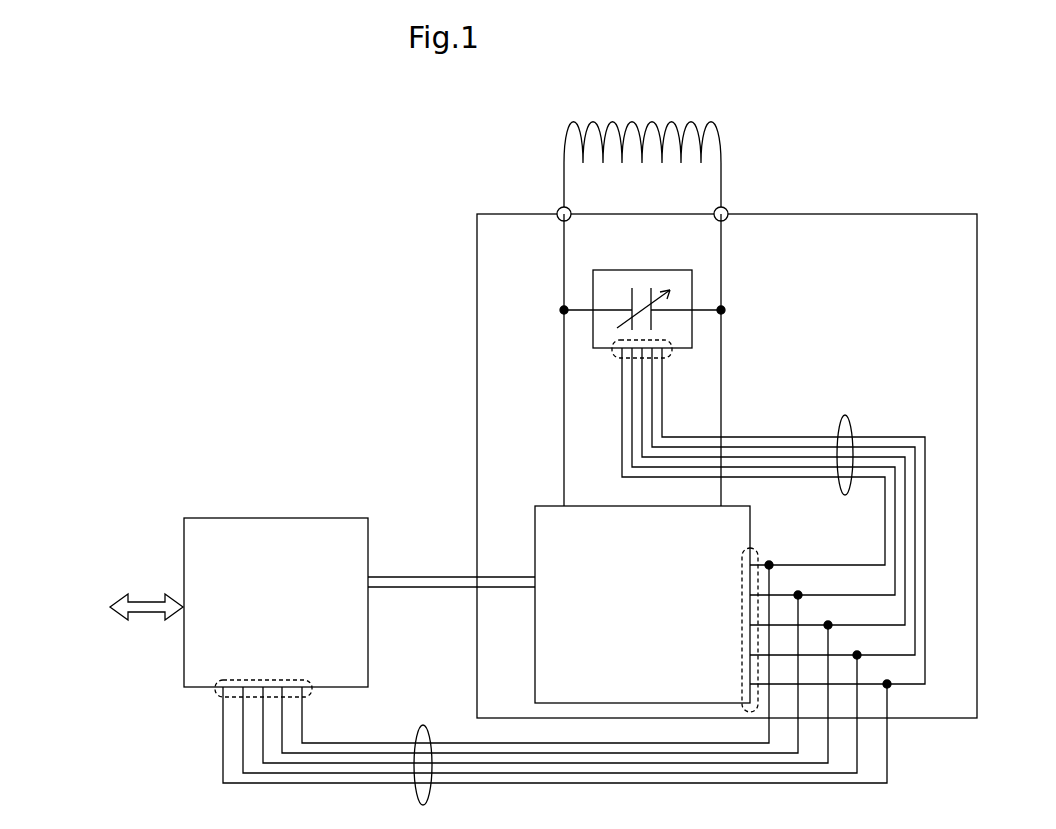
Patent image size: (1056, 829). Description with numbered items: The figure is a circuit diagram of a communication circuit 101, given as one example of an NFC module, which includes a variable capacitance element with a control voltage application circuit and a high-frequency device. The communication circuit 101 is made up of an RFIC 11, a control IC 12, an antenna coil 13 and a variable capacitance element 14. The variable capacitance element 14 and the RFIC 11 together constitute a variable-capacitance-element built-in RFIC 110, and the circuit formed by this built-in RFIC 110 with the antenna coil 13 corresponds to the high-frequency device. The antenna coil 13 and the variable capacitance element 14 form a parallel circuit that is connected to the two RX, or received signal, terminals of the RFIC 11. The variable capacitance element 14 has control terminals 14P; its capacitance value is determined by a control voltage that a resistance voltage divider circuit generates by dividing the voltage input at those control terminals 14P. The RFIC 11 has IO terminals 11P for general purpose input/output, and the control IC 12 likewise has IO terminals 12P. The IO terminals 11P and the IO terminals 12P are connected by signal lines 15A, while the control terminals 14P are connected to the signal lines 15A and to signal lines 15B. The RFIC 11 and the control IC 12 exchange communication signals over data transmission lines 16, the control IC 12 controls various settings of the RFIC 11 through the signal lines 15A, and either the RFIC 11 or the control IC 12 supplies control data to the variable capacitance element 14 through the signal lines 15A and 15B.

The communication circuit 101 is at (1003, 108).
The variable-capacitance-element built-in RFIC 110 is at (977, 214).
The antenna coil 13 is at (727, 143).
The variable capacitance element 14 is at (645, 270).
The control terminals 14P is at (672, 356).
The signal lines 15B is at (845, 415).
The RFIC 11 is at (752, 508).
The IO terminals 11P is at (757, 560).
The control IC 12 is at (278, 518).
The IO terminals 12P is at (214, 697).
The signal lines 15A is at (423, 725).
The data transmission lines 16 is at (422, 577).